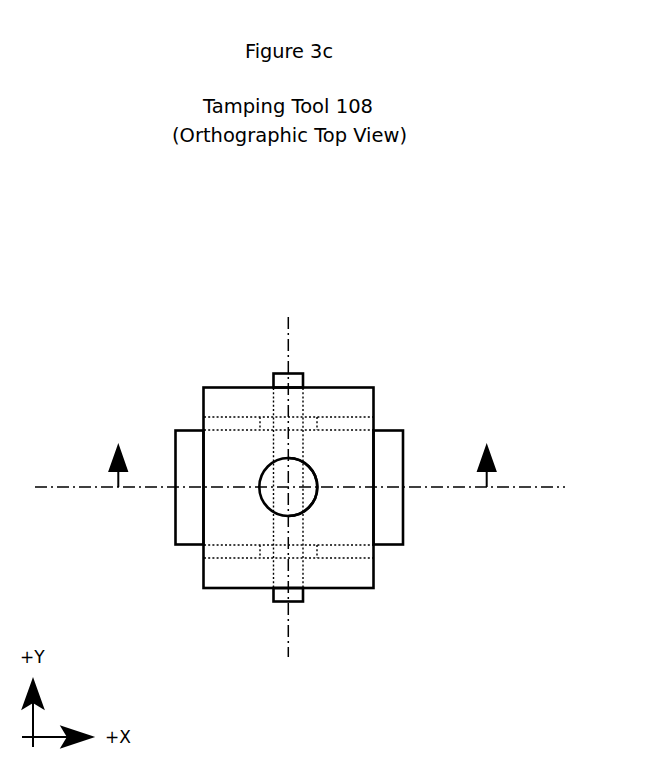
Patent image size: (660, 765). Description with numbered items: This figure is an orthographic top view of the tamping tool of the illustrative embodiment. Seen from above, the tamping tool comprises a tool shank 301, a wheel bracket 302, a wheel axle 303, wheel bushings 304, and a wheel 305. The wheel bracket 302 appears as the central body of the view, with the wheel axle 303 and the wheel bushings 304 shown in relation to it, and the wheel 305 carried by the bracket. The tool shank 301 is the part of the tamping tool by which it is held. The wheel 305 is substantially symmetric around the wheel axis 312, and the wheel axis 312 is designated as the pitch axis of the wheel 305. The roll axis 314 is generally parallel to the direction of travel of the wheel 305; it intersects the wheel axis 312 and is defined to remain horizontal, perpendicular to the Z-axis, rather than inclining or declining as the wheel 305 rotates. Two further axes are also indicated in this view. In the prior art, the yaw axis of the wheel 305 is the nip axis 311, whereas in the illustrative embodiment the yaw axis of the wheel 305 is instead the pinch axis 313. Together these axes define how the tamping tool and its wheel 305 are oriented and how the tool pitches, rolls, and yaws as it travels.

The tool shank 301 is at (288, 487).
The wheel bracket 302 is at (347, 387).
The wheel axle 303 is at (303, 373).
The wheel bushings 304 is at (260, 546).
The wheel 305 is at (403, 518).
The nip axis 311 is at (315, 502).
The wheel axis 312 is at (290, 630).
The pinch axis 313 is at (347, 487).
The roll axis 314 is at (545, 488).